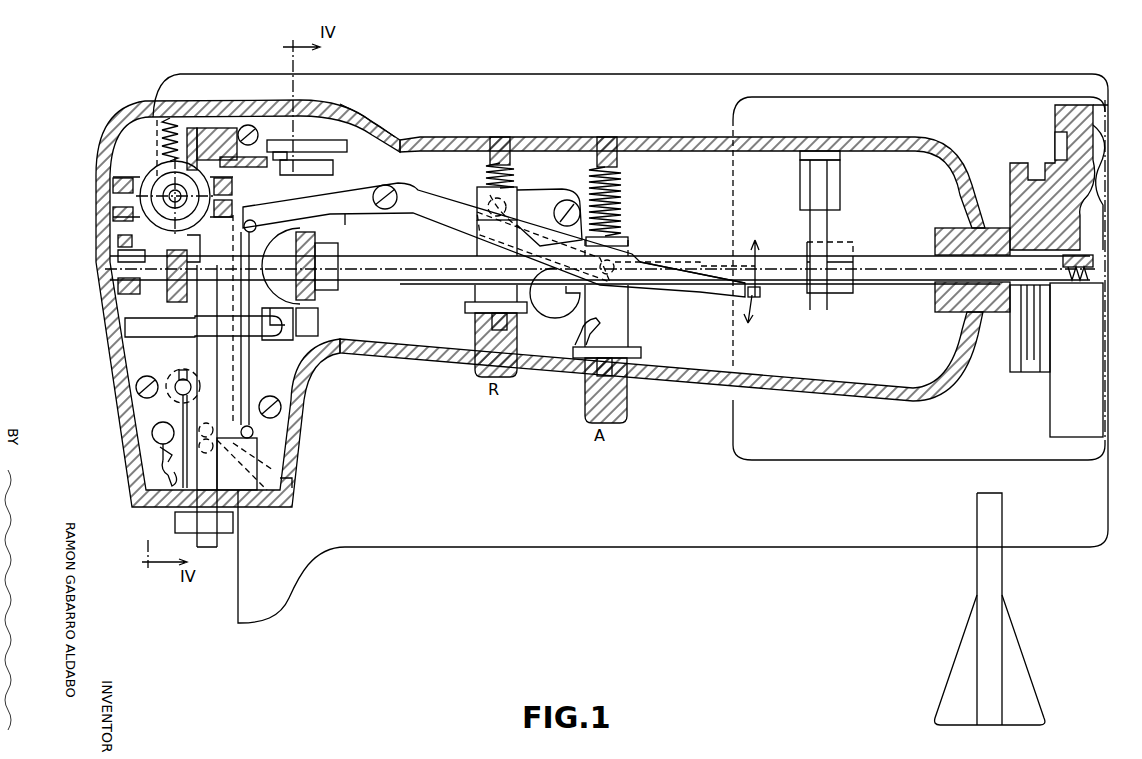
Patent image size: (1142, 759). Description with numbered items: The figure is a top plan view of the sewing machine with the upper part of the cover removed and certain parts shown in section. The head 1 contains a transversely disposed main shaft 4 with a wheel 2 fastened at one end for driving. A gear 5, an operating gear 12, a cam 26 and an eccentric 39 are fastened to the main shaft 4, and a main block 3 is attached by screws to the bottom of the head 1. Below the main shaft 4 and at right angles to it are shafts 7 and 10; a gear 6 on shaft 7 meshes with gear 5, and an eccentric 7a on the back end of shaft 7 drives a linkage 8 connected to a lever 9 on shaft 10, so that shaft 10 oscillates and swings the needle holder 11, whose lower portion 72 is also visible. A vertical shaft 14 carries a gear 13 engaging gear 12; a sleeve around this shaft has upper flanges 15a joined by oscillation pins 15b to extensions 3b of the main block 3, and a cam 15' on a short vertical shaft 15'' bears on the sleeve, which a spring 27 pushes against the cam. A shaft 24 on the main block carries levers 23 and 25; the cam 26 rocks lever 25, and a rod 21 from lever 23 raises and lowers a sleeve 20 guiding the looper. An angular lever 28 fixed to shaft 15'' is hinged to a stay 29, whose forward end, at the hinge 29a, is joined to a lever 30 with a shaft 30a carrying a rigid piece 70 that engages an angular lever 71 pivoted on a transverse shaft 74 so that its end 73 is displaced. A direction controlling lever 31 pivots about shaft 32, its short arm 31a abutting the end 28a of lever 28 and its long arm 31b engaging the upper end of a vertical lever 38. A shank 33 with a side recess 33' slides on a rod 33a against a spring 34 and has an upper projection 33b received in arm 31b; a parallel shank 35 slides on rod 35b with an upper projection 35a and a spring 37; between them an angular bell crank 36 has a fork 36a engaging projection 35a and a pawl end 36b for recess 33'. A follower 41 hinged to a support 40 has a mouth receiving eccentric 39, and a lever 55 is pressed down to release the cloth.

The head 1 is at (550, 140).
The wheel 2 is at (1060, 119).
The main block 3 is at (260, 386).
The extensions 3b is at (123, 185).
The main shaft 4 is at (898, 262).
The gear 5 is at (318, 294).
The gear 6 is at (352, 266).
The shaft 7 is at (311, 327).
The eccentric 7a is at (358, 134).
The linkage 8 is at (300, 139).
The lever 9 is at (240, 135).
The shaft 10 is at (215, 417).
The needle holder 11 is at (180, 522).
The operating gear 12 is at (165, 298).
The gear 13 is at (172, 164).
The vertical shaft 14 is at (170, 190).
The upper flanges 15a is at (112, 220).
The oscillation pins 15b is at (112, 198).
The cam 15' is at (94, 245).
The vertical short shaft 15'' is at (97, 282).
The sleeve 20 is at (150, 437).
The rod 21 is at (176, 393).
The lever 23 is at (190, 365).
The shaft 24 is at (253, 338).
The lever 25 is at (150, 324).
The cam 26 is at (112, 256).
The spring 27 is at (178, 122).
The angular lever 28 is at (233, 281).
The end of angular lever 28a is at (256, 226).
The stay 29 is at (233, 320).
The pivot 29a is at (255, 434).
The lever 30 is at (262, 442).
The shaft 30a is at (292, 482).
The direction controlling lever 31 is at (446, 223).
The short arm 31a is at (370, 232).
The long arm 31b is at (722, 296).
The shaft 32 is at (388, 186).
The shank 33 is at (607, 354).
The rod 33a is at (603, 148).
The upper projection 33b is at (614, 265).
The side recess 33' is at (568, 335).
The spring 34 is at (621, 195).
The shank 35 is at (508, 305).
The upper projection 35a is at (500, 200).
The rod 35b is at (497, 148).
The angular bell crank 36 is at (544, 212).
The fork 36a is at (488, 226).
The pawl end 36b is at (552, 295).
The spring 37 is at (514, 180).
The vertical lever 38 is at (756, 300).
The eccentric 39 is at (842, 248).
The support 40 is at (818, 152).
The follower 41 is at (820, 188).
The lever 55 is at (988, 596).
The rigid piece 70 is at (220, 457).
The angular lever 71 is at (155, 468).
The needle bar end 72 is at (206, 492).
The end of lever 73 is at (158, 478).
The transverse shaft 74 is at (158, 452).